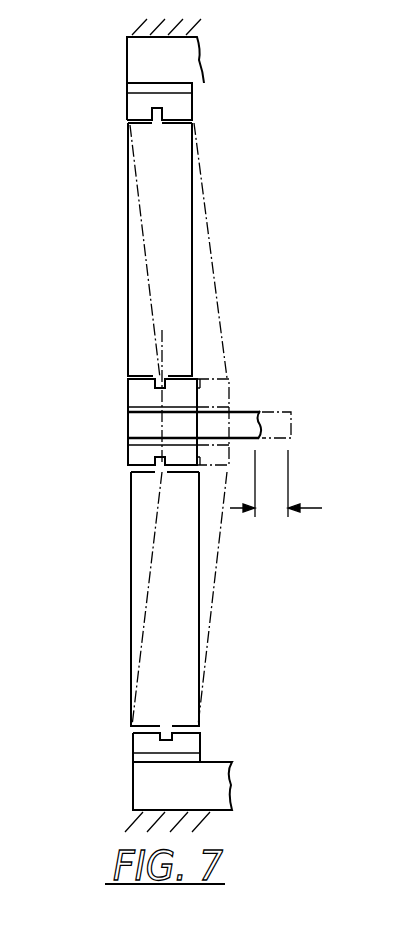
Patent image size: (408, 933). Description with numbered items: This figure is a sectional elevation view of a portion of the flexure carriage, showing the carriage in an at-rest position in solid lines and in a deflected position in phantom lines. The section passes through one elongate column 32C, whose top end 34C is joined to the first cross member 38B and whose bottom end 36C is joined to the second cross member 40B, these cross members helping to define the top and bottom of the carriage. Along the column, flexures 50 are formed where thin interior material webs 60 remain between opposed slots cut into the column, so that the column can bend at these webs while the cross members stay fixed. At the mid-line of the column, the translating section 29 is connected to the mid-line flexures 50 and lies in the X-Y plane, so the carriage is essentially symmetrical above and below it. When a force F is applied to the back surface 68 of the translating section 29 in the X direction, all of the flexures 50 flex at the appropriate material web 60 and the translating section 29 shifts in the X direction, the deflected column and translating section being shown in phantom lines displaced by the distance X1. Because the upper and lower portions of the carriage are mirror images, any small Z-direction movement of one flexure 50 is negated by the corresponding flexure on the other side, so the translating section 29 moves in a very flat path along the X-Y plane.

The first cross member 38B is at (130, 63).
The elongate column 32C is at (166, 423).
The top end 34C is at (195, 135).
The bottom end 36C is at (137, 697).
The second cross member 40B is at (150, 787).
The flexure 50 is at (200, 103).
The interior first material web 60 is at (152, 124).
The back surface 68 is at (130, 433).
The translating section 29 is at (262, 403).
The force F is at (150, 425).
The displacement distance X1 is at (272, 510).